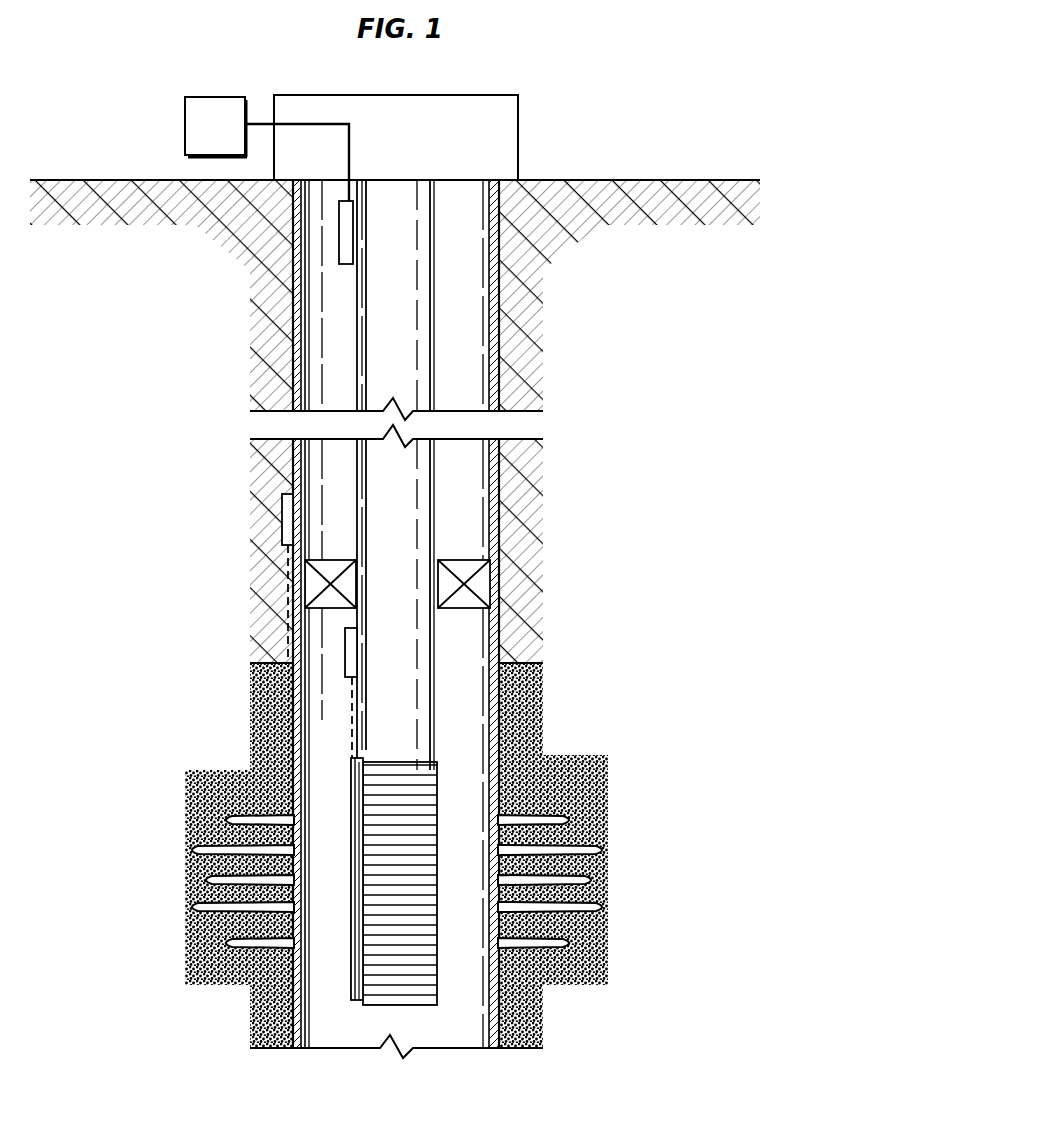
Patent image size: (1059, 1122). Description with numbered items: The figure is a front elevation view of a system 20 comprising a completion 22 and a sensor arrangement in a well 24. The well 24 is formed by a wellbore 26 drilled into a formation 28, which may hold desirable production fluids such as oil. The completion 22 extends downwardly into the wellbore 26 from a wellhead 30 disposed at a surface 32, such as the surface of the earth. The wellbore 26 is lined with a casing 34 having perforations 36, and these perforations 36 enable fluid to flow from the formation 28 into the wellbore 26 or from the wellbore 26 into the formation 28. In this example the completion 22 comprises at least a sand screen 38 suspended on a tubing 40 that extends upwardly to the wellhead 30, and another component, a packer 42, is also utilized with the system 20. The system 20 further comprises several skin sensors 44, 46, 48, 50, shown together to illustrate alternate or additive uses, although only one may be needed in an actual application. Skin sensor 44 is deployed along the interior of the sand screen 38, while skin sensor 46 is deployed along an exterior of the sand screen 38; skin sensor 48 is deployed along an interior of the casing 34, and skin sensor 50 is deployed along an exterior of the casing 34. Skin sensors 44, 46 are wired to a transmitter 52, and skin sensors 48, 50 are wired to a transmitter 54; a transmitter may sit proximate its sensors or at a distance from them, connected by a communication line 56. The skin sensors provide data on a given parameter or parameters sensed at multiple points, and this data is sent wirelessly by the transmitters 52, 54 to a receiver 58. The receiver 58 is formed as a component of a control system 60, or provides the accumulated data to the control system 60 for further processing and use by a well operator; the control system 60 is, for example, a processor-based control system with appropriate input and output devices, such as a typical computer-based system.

The system 20 is at (398, 619).
The completion 22 is at (462, 658).
The well 24 is at (520, 312).
The wellbore 26 is at (470, 718).
The formation 28 is at (396, 855).
The wellhead 30 is at (518, 142).
The surface 32 is at (707, 180).
The casing 34 is at (500, 727).
The perforations 36 is at (232, 850).
The sand screen 38 is at (440, 985).
The tubing 40 is at (437, 372).
The packer 42 is at (480, 582).
The skin sensor 44 is at (355, 955).
The skin sensor 46 is at (352, 992).
The skin sensor 48 is at (305, 770).
The skin sensor 50 is at (300, 733).
The transmitter 52 is at (345, 652).
The transmitter 54 is at (282, 518).
The communication line 56 is at (288, 590).
The receiver 58 is at (339, 250).
The control system 60 is at (267, 149).